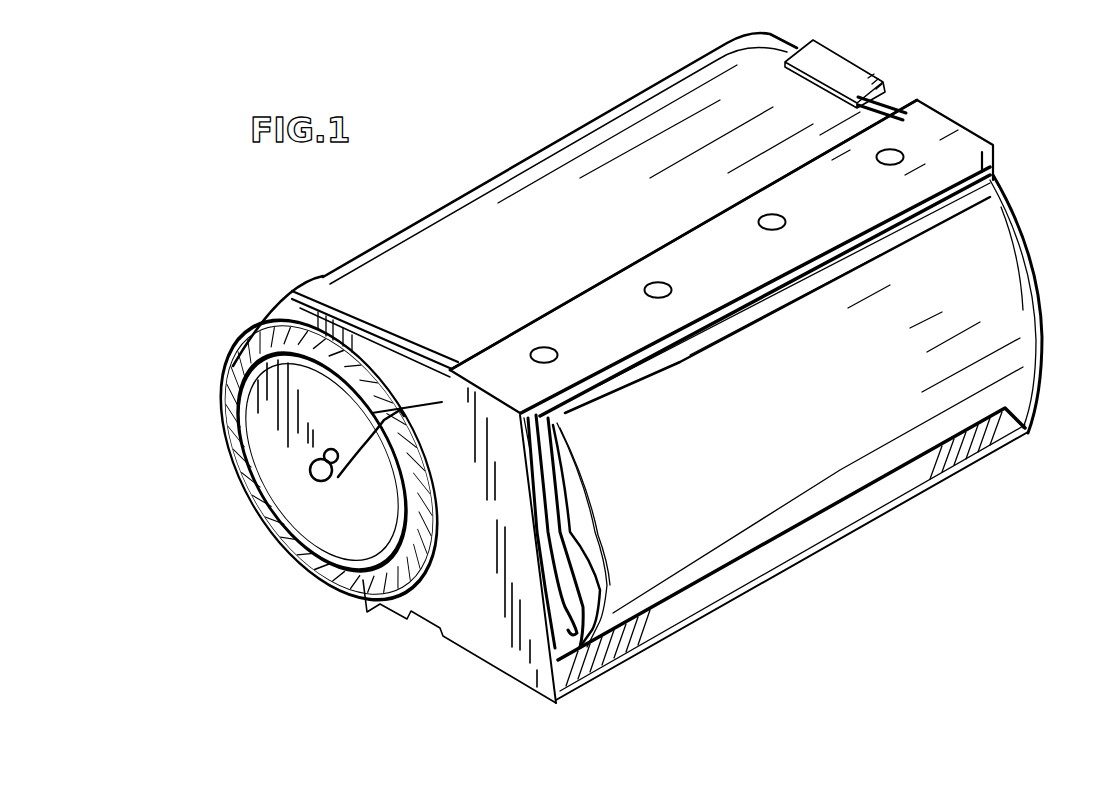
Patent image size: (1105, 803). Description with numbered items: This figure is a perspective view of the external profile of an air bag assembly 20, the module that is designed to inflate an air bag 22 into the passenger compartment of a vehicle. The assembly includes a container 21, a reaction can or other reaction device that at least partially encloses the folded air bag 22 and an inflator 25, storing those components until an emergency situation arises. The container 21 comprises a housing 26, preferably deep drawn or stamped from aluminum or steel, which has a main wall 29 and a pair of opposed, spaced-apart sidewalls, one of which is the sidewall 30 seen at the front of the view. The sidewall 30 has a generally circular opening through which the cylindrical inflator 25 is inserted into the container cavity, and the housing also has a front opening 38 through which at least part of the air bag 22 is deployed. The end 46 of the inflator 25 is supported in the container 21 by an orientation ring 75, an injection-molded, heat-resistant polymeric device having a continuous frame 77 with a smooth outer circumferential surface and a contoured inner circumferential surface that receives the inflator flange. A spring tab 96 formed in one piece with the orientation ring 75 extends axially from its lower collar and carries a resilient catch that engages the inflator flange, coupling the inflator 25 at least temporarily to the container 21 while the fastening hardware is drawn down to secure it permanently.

The air bag assembly 20 is at (493, 116).
The container 21 is at (316, 277).
The air bag 22 is at (780, 474).
The inflator 25 is at (308, 512).
The housing 26 is at (488, 187).
The main wall 29 is at (443, 250).
The sidewall 30 is at (470, 633).
The front opening 38 is at (718, 608).
The end 46 is at (338, 540).
The orientation ring 75 is at (214, 410).
The frame 77 is at (329, 460).
The spring tab 96 is at (322, 462).